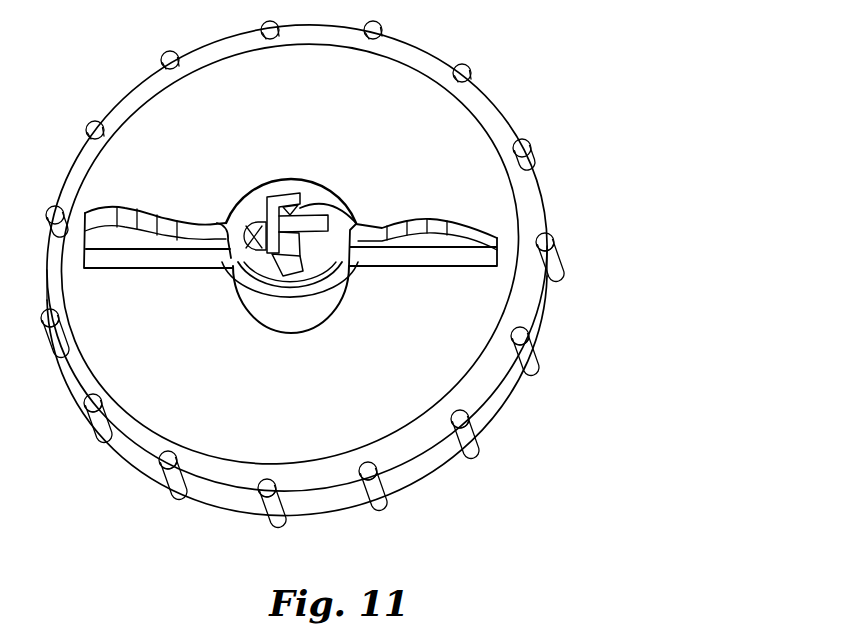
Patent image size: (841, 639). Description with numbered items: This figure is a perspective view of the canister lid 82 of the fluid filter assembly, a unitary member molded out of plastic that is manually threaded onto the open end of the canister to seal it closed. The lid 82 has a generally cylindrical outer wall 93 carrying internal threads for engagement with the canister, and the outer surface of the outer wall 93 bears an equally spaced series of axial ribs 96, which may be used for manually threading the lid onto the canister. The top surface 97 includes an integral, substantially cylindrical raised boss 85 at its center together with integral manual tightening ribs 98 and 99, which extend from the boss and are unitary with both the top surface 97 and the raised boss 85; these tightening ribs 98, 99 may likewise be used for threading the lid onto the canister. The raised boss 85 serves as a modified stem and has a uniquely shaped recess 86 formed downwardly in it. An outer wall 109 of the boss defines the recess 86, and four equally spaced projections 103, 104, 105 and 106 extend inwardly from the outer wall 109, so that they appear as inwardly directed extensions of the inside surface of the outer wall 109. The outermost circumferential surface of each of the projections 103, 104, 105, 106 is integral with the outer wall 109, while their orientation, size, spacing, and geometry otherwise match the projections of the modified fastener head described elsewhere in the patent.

The lid 82 is at (366, 278).
The raised boss 85 is at (299, 226).
The recess 86 is at (321, 217).
The outer wall 93 is at (297, 405).
The axial ribs 96 is at (302, 274).
The top surface 97 is at (291, 282).
The tightening rib 98 is at (423, 280).
The tightening rib 99 is at (158, 279).
The projection 103 is at (281, 183).
The projection 104 is at (324, 292).
The projection 105 is at (263, 287).
The projection 106 is at (217, 205).
The outer wall 109 is at (319, 301).